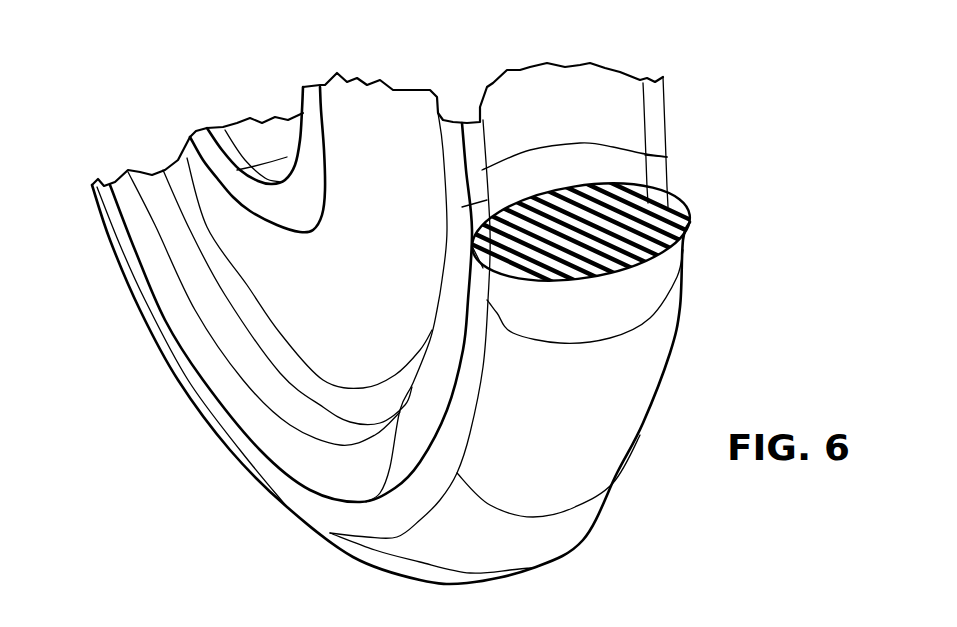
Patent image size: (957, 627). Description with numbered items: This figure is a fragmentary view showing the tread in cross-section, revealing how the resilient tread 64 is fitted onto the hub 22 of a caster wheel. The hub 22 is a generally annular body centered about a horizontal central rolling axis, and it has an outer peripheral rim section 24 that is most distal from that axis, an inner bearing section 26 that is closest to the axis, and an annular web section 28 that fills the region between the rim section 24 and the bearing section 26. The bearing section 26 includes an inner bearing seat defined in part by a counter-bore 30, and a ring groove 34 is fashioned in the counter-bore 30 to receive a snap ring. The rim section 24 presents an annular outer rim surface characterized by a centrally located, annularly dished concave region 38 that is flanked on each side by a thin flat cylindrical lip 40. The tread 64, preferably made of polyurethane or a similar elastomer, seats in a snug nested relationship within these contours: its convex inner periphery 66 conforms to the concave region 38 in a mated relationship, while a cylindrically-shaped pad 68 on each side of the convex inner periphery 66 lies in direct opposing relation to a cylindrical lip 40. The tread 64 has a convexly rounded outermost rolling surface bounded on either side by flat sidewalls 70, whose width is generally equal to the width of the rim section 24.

The hub 22 is at (660, 80).
The rim section 24 is at (293, 452).
The bearing section 26 is at (250, 200).
The web section 28 is at (339, 301).
The counter-bore 30 is at (257, 137).
The ring groove 34 is at (227, 130).
The concave region 38 is at (563, 97).
The cylindrical lip 40 is at (470, 130).
The tread 64 is at (674, 343).
The convex inner periphery 66 is at (597, 187).
The cylindrical pad 68 is at (663, 205).
The sidewall 70 is at (677, 212).